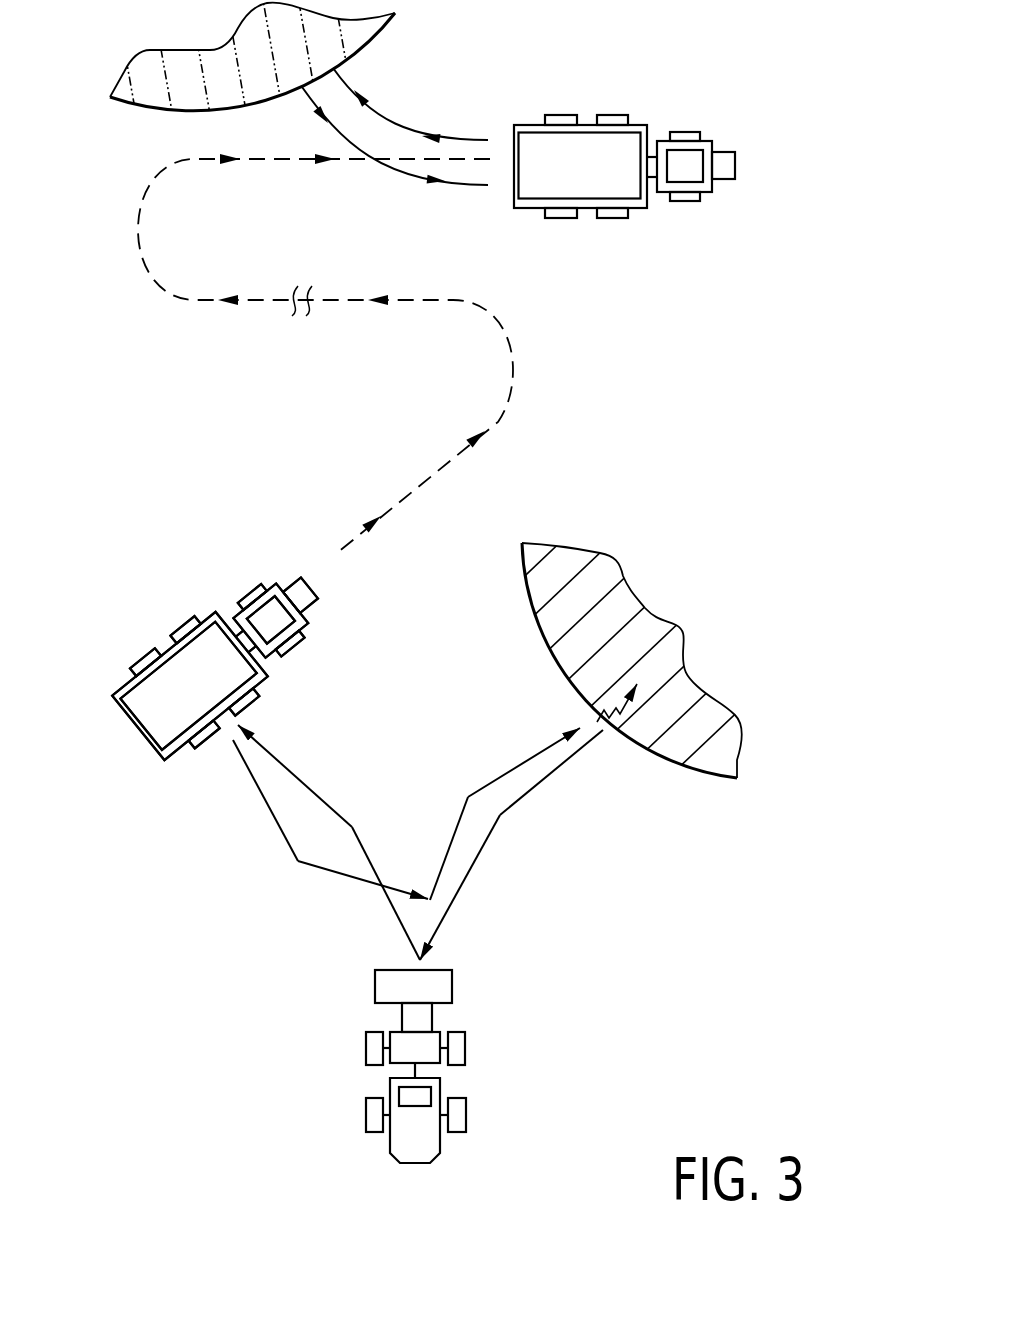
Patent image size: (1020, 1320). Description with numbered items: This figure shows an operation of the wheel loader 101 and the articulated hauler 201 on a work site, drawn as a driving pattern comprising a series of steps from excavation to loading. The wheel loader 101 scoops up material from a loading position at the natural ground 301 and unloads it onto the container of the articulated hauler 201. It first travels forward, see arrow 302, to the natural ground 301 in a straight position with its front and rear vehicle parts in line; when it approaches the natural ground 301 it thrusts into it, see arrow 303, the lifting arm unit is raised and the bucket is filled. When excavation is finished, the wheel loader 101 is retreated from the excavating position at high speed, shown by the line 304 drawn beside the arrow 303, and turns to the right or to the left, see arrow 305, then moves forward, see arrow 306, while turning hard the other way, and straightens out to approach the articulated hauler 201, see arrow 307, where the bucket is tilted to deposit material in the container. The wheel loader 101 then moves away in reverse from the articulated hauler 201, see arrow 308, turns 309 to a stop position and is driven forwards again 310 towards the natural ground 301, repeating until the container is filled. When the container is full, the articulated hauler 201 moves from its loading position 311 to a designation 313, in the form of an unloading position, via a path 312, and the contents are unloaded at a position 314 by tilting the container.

The wheel loader 101 is at (493, 1087).
The articulated hauler 201 is at (155, 720).
The natural ground 301 is at (643, 730).
The arrow (forward travel) 302 is at (513, 768).
The arrow (thrust and retreat) 303 is at (590, 720).
The reflected signal path 304 is at (553, 790).
The arrow (turn) 305 is at (468, 873).
The arrow (forward while turning) 306 is at (370, 850).
The arrow (approach to hauler) 307 is at (300, 777).
The arrow (reverse away) 308 is at (278, 832).
The turn to stop position 309 is at (338, 875).
The forward drive to natural ground 310 is at (455, 825).
The loading position 311 is at (142, 610).
The path 312 is at (510, 347).
The designation (unloading position) 313 is at (632, 240).
The unloading position 314 is at (190, 95).